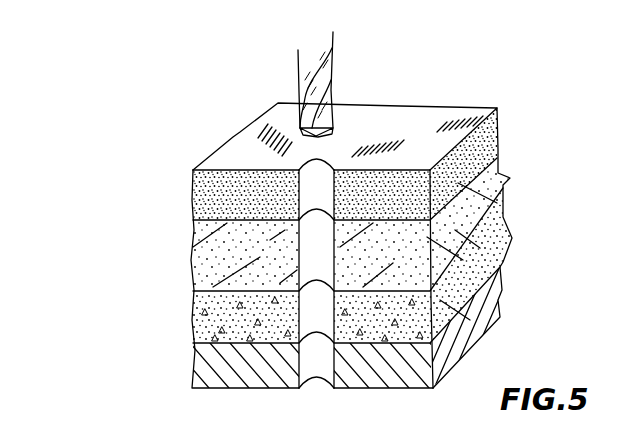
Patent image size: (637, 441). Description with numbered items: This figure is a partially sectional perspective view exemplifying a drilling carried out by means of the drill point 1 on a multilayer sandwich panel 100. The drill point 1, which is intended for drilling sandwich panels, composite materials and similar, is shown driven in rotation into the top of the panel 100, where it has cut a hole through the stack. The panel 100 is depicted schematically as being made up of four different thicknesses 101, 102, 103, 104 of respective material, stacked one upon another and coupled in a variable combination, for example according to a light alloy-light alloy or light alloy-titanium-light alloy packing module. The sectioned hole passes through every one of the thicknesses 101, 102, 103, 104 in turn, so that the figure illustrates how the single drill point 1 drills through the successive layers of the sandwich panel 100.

The drill point 1 is at (298, 38).
The sandwich panel 100 is at (327, 240).
The thickness of material 101 is at (495, 128).
The thickness of material 102 is at (495, 182).
The thickness of material 103 is at (500, 242).
The thickness of material 104 is at (492, 293).